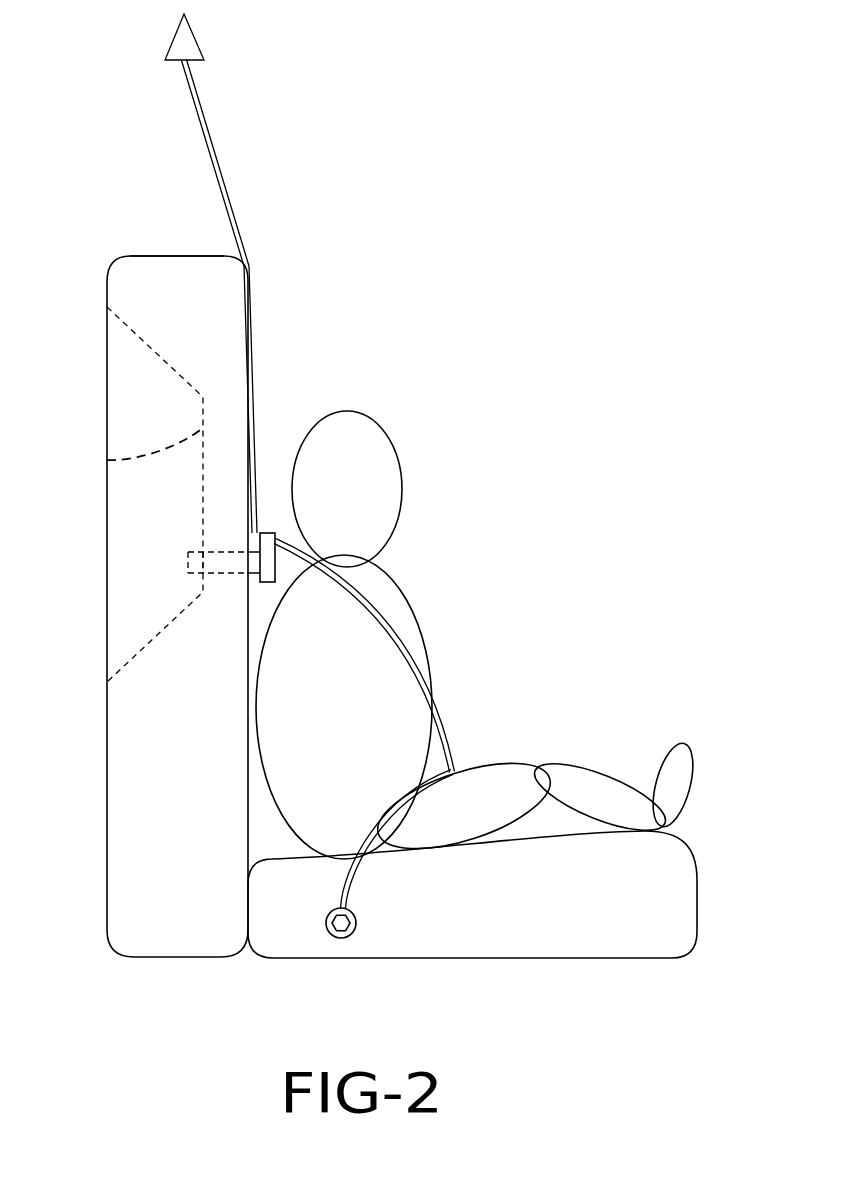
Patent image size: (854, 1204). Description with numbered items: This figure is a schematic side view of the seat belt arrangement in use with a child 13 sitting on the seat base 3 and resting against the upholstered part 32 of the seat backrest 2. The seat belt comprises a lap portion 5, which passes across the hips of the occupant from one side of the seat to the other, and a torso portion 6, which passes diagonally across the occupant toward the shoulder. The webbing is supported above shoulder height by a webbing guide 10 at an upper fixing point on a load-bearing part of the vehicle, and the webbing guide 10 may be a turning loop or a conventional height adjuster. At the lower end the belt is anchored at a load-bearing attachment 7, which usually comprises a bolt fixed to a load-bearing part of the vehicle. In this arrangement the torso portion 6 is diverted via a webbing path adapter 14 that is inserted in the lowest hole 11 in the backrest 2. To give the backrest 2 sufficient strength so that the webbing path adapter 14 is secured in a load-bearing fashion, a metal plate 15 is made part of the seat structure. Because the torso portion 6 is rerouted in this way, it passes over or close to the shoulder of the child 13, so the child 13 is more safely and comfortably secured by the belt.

The backrest 2 is at (143, 302).
The seat base 3 is at (580, 928).
The lap portion 5 is at (352, 872).
The torso portion 6 is at (395, 632).
The load-bearing attachment 7 is at (341, 925).
The webbing guide 10 is at (197, 40).
The lowest hole 11 is at (250, 552).
The child 13 is at (390, 406).
The webbing path adapter 14 is at (278, 533).
The metal plate 15 is at (107, 460).
The upholstered part 32 is at (178, 255).